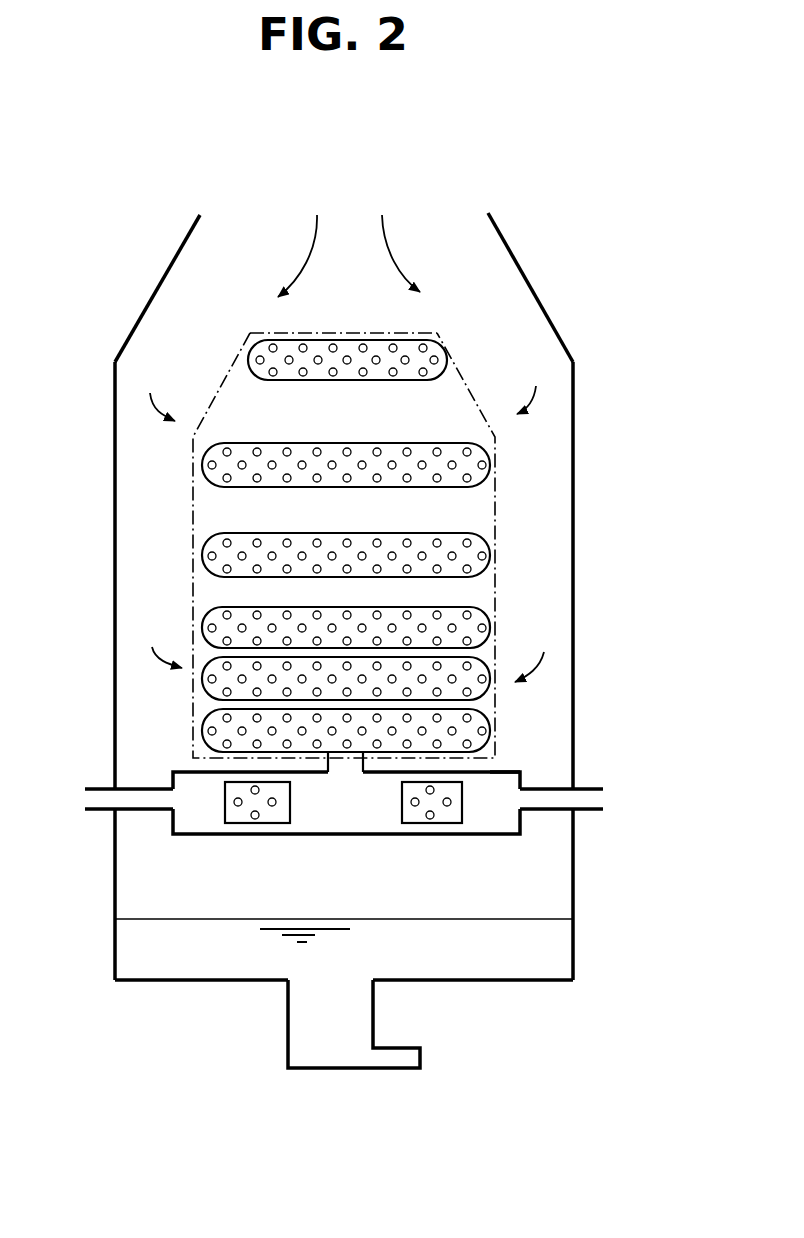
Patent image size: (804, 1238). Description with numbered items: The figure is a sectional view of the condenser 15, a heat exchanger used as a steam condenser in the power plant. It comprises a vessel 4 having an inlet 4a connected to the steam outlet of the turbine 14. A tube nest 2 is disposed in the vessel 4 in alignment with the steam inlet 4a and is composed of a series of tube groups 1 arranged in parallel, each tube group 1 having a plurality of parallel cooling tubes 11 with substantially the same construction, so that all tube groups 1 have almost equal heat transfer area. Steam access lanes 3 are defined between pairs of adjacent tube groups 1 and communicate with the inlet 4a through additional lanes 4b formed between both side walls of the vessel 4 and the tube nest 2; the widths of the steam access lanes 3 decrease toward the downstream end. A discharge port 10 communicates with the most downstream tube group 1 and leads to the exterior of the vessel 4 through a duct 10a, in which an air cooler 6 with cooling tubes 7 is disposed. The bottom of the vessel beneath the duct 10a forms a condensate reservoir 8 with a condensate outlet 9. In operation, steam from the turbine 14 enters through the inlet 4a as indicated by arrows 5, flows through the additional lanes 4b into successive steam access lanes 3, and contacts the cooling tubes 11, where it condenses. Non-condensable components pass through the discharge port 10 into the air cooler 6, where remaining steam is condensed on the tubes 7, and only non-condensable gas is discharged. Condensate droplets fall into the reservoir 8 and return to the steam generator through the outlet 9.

The tube group 1 is at (450, 355).
The tube nest 2 is at (193, 523).
The steam access lane 3 is at (252, 403).
The vessel 4 is at (115, 444).
The inlet 4a is at (461, 243).
The additional lane 4b is at (132, 522).
The arrows 5 is at (313, 247).
The air cooler 6 is at (197, 825).
The cooling tubes 7 is at (263, 815).
The condensate reservoir 8 is at (172, 960).
The condensate outlet 9 is at (398, 1058).
The discharge port 10 is at (340, 755).
The duct 10a is at (498, 772).
The cooling tubes 11 is at (255, 348).
The turbine 14 is at (353, 119).
The condenser 15 is at (140, 288).